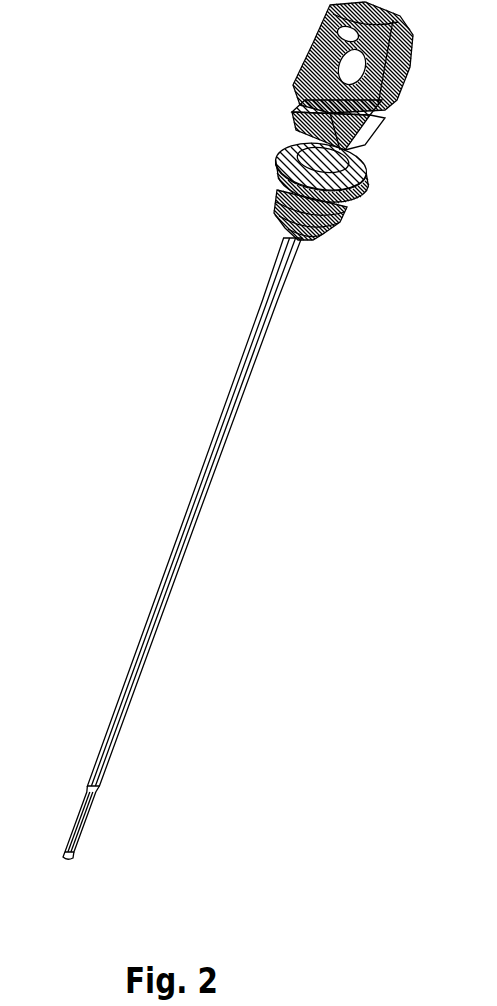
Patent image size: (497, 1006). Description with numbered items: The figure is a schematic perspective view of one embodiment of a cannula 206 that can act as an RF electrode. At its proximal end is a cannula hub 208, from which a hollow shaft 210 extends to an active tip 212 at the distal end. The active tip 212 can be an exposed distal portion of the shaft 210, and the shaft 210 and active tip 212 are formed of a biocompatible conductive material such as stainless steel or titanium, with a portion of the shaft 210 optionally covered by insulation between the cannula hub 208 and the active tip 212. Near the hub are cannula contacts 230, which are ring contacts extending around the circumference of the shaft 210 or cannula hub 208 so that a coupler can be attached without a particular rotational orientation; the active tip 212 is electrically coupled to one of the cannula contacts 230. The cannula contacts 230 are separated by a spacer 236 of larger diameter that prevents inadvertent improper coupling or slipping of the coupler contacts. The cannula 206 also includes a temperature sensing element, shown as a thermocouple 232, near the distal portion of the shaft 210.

The cannula 206 is at (140, 254).
The cannula hub 208 is at (310, 105).
The shaft 210 is at (197, 522).
The active tip 212 is at (68, 858).
The cannula contacts 230 is at (358, 153).
The thermocouple 232 is at (90, 792).
The spacer 236 is at (285, 155).